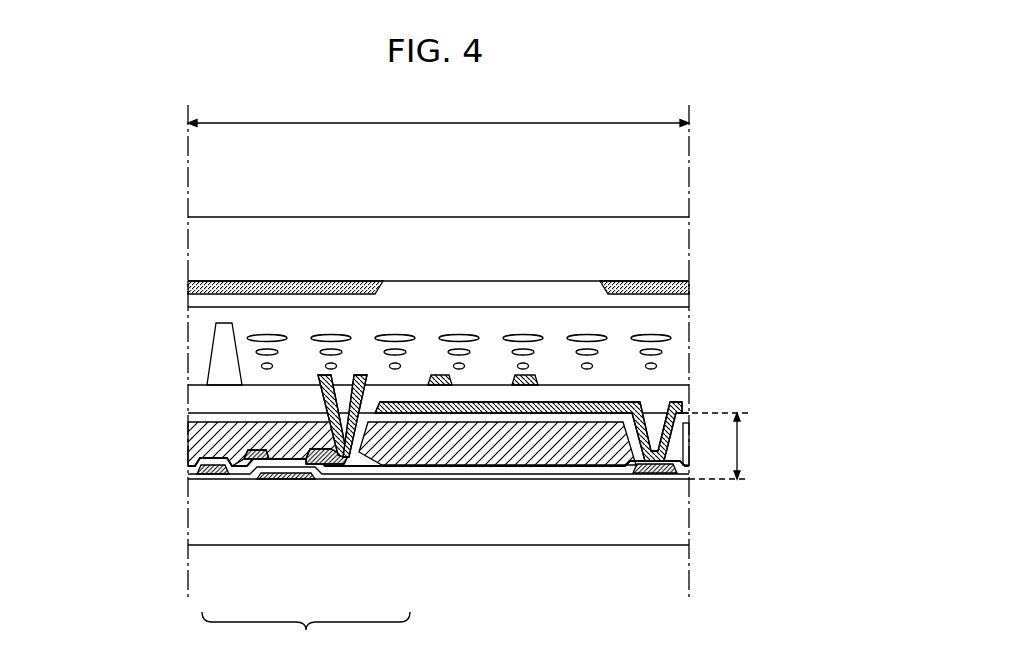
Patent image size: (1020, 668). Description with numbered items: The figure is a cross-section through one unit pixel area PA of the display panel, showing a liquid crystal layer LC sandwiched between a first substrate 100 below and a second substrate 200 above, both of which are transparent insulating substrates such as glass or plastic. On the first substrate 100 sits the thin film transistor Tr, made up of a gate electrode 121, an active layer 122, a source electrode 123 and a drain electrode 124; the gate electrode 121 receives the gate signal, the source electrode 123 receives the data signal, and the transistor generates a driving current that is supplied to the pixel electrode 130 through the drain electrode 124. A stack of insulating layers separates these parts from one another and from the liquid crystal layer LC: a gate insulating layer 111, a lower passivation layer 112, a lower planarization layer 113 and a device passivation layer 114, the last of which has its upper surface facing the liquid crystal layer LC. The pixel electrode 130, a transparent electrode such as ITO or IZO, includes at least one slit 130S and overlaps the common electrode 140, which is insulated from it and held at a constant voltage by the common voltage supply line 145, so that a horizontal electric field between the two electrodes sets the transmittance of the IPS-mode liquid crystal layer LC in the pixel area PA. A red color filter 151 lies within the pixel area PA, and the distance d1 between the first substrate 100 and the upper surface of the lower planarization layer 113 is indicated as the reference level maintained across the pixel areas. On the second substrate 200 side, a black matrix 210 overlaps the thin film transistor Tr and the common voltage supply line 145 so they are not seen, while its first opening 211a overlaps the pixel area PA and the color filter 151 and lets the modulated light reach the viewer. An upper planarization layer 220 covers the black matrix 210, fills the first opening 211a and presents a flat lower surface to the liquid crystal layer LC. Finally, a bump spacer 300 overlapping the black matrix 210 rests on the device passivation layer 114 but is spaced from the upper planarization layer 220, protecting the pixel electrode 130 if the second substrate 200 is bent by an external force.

The first substrate 100 is at (680, 508).
The gate insulating layer 111 is at (187, 477).
The lower passivation layer 112 is at (190, 468).
The lower planarization layer 113 is at (193, 418).
The device passivation layer 114 is at (197, 395).
The gate electrode 121 is at (285, 479).
The active layer 122 is at (340, 462).
The source electrode 123 is at (228, 474).
The drain electrode 124 is at (366, 462).
The pixel electrode 130 is at (348, 428).
The slit 130S is at (490, 383).
The common electrode 140 is at (685, 405).
The common voltage supply line 145 is at (650, 470).
The red color filter 151 is at (592, 453).
The second substrate 200 is at (678, 245).
The black matrix 210 is at (678, 290).
The first opening 211a is at (502, 291).
The upper planarization layer 220 is at (190, 298).
The bump spacer 300 is at (215, 352).
The liquid crystal layer LC is at (700, 318).
The pixel area PA is at (438, 111).
The thin film transistor Tr is at (306, 635).
The distance d1 is at (720, 446).